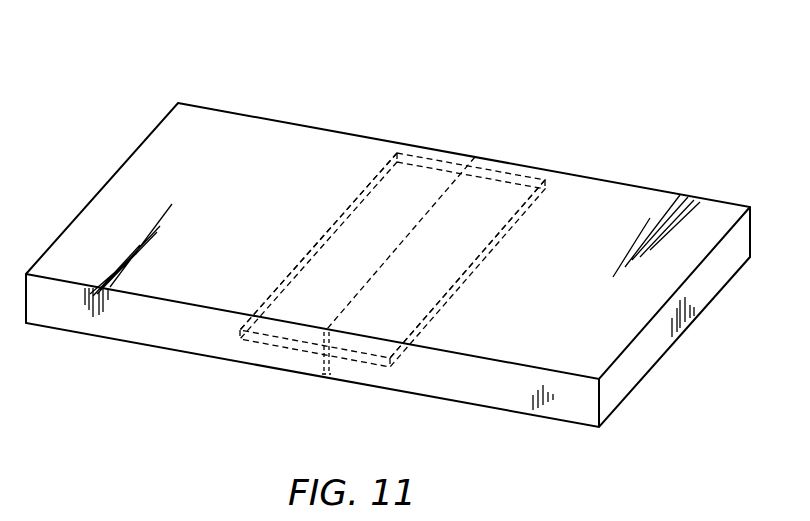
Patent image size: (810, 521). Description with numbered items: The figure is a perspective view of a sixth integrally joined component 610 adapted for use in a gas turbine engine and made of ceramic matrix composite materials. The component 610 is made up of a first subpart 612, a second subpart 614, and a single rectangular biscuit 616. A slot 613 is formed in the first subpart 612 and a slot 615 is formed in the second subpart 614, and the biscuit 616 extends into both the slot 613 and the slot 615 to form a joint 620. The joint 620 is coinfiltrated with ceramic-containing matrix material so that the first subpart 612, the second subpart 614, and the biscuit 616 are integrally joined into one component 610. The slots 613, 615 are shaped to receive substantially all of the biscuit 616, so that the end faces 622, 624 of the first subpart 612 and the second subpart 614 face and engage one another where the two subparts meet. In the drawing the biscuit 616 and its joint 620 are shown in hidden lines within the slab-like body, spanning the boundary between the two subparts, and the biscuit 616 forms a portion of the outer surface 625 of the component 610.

The sixth integrally joined component 610 is at (642, 65).
The first subpart 612 is at (217, 107).
The slot 613 is at (350, 232).
The second subpart 614 is at (687, 194).
The slot 615 is at (457, 256).
The biscuit 616 is at (472, 220).
The joint 620 is at (418, 146).
The end face 622 is at (323, 344).
The end face 624 is at (332, 376).
The outer surface 625 is at (285, 140).